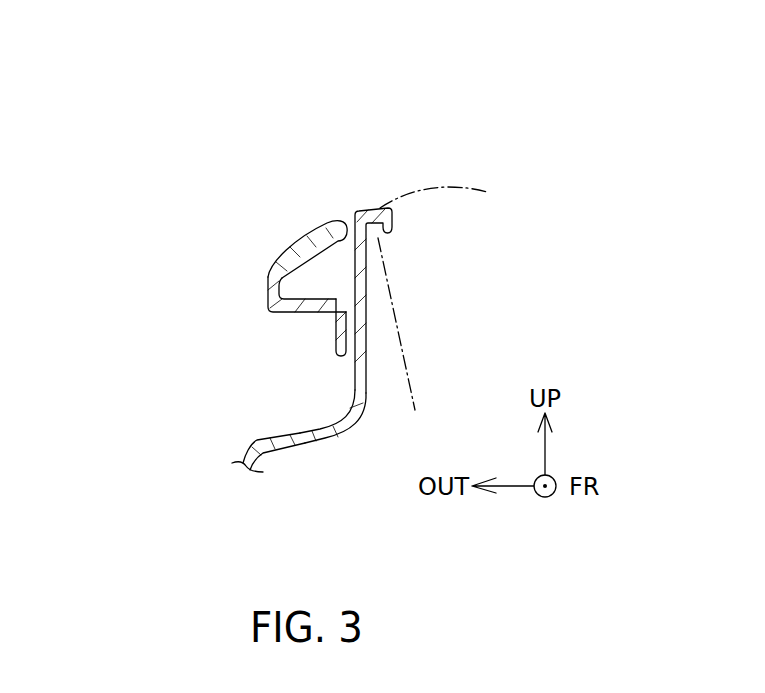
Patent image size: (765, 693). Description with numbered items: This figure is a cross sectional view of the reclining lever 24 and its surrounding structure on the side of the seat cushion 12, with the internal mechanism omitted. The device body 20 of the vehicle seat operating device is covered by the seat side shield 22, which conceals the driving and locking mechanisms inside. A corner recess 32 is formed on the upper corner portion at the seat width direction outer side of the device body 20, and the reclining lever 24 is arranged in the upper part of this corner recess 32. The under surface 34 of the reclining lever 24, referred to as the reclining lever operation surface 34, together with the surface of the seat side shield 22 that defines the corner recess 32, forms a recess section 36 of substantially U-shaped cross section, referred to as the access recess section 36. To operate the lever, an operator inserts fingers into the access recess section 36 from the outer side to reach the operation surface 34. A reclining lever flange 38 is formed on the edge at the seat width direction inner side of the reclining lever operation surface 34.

The seat cushion 12 is at (447, 187).
The device body 20 is at (360, 195).
The seat side shield 22 is at (310, 432).
The reclining lever 24 is at (285, 216).
The corner recess 32 is at (347, 403).
The reclining lever operation surface 34 is at (302, 316).
The access recess section 36 is at (265, 376).
The reclining lever flange 38 is at (334, 333).